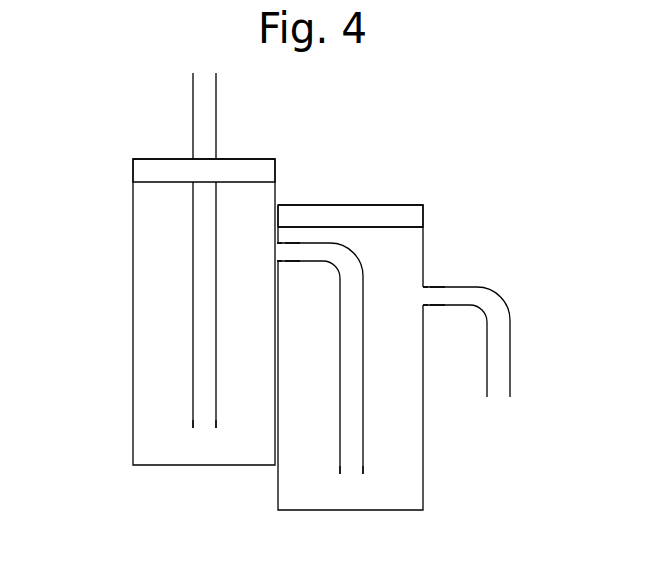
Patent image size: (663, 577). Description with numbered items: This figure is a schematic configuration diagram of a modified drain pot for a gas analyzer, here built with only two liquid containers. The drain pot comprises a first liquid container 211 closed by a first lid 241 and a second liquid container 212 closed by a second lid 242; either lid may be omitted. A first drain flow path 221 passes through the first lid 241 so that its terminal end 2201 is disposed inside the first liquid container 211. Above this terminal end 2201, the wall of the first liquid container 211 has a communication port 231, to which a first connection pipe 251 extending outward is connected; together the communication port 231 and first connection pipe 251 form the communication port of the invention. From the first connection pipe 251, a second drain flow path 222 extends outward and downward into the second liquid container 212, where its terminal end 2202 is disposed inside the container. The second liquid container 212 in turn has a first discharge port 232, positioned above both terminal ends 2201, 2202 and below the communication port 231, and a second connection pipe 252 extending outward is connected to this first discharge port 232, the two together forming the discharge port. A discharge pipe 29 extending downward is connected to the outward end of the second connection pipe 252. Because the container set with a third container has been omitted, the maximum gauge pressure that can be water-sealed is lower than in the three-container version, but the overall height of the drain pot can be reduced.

The first liquid container 211 is at (168, 298).
The second liquid container 212 is at (315, 422).
The first drain flow path 221 is at (205, 242).
The second drain flow path 222 is at (352, 380).
The terminal end of the first drain flow path 2201 is at (203, 428).
The terminal end of the second drain flow path 2202 is at (350, 473).
The communication port 231 is at (277, 250).
The first discharge port 232 is at (424, 298).
The first lid 241 is at (183, 172).
The second lid 242 is at (358, 218).
The first connection pipe 251 is at (300, 242).
The second connection pipe 252 is at (445, 307).
The discharge pipe 29 is at (493, 350).